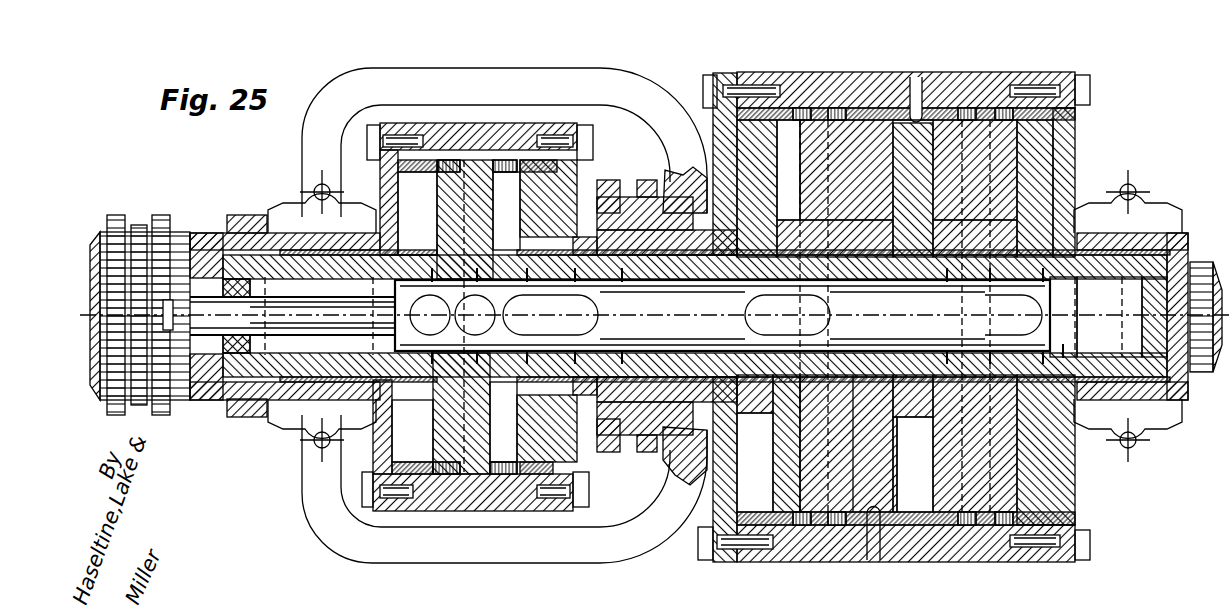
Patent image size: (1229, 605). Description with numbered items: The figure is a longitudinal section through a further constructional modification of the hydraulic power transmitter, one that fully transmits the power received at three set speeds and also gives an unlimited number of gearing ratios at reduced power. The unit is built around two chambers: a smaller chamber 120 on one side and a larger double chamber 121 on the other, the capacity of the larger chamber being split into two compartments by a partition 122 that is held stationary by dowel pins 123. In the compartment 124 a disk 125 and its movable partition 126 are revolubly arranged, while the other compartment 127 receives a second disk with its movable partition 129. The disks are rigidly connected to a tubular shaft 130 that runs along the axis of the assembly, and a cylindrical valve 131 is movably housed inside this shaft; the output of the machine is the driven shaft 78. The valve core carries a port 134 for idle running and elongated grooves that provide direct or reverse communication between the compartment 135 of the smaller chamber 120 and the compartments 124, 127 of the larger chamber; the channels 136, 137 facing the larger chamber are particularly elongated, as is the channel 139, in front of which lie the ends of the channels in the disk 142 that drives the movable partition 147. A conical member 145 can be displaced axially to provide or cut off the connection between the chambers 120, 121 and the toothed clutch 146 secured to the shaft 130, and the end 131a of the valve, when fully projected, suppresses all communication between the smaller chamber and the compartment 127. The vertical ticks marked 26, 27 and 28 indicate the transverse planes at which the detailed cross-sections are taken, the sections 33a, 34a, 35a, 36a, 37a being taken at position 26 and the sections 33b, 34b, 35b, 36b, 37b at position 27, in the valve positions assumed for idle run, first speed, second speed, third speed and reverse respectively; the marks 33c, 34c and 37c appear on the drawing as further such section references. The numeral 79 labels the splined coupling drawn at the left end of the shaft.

The section line 26— 26 is at (462, 115).
The section line 27— 27 is at (975, 72).
The section line 28 is at (628, 165).
The section line 33a— 33a is at (477, 314).
The section line 34a— 34a is at (527, 316).
The section line 35a— 35a is at (575, 315).
The section line 36a— 36a is at (629, 315).
The section line 37a— 37a is at (428, 317).
The section line 33b— 33b is at (987, 364).
The section line 34b— 34b is at (1039, 364).
The section line 35b— 35b is at (1066, 350).
The section line 36b— 36b is at (1092, 419).
The section line 37b— 37b is at (942, 364).
The section plane 33c is at (987, 270).
The section plane 34c is at (1039, 270).
The section plane 37c is at (946, 271).
The driven shaft 78 is at (1204, 268).
The splined coupling 79 is at (207, 243).
The smaller chamber 120 is at (430, 124).
The larger double chamber 121 is at (843, 73).
The partition 122 is at (902, 127).
The dowel pins 123 is at (920, 92).
The compartment 124 is at (750, 493).
The disk 125 is at (815, 514).
The movable partition 126 is at (805, 135).
The compartment 127 is at (917, 492).
The movable partition 129 is at (1032, 148).
The tubular shaft 130 is at (245, 418).
The cylindrical valve 131 is at (694, 293).
The end of the valve 131a is at (1050, 308).
The port 134 is at (378, 452).
The compartment 135 is at (410, 182).
The channel 136 is at (1078, 435).
The channel 137 is at (758, 417).
The channel 139 is at (473, 322).
The disk 142 is at (532, 140).
The conical member 145 is at (641, 180).
The toothed clutch 146 is at (630, 447).
The movable partition 147 is at (520, 322).